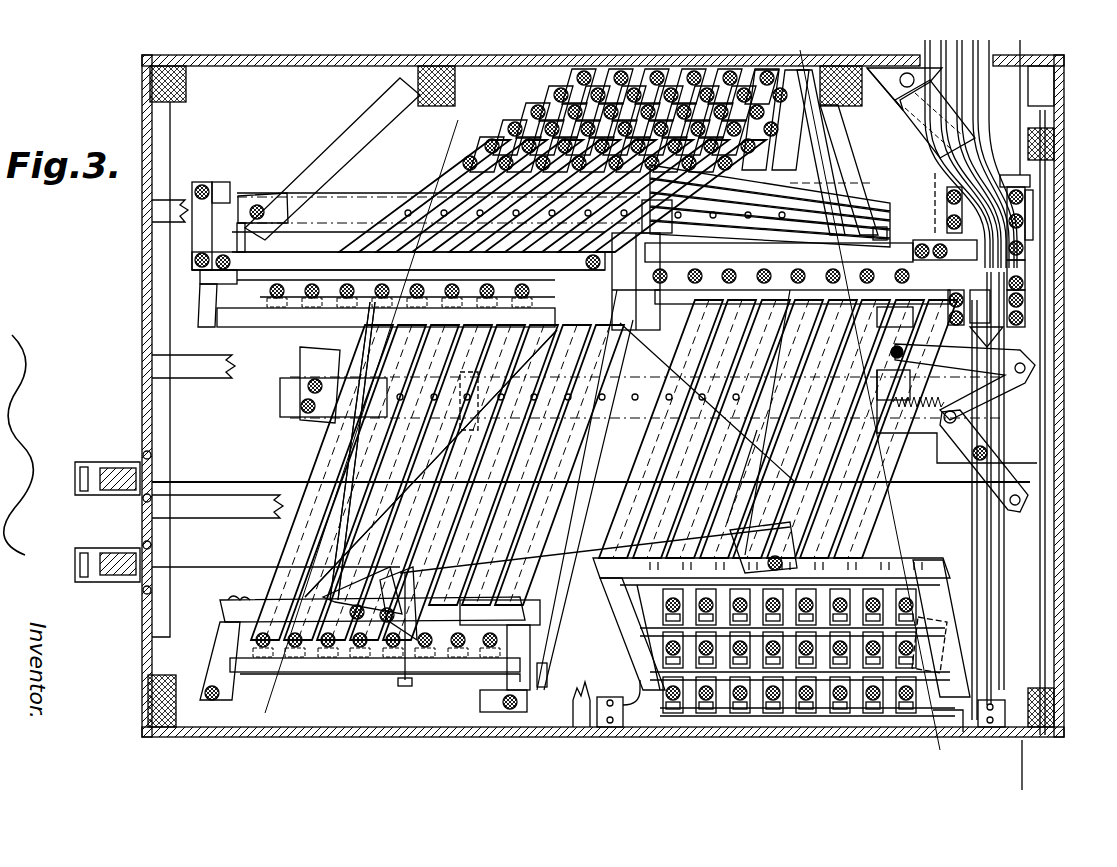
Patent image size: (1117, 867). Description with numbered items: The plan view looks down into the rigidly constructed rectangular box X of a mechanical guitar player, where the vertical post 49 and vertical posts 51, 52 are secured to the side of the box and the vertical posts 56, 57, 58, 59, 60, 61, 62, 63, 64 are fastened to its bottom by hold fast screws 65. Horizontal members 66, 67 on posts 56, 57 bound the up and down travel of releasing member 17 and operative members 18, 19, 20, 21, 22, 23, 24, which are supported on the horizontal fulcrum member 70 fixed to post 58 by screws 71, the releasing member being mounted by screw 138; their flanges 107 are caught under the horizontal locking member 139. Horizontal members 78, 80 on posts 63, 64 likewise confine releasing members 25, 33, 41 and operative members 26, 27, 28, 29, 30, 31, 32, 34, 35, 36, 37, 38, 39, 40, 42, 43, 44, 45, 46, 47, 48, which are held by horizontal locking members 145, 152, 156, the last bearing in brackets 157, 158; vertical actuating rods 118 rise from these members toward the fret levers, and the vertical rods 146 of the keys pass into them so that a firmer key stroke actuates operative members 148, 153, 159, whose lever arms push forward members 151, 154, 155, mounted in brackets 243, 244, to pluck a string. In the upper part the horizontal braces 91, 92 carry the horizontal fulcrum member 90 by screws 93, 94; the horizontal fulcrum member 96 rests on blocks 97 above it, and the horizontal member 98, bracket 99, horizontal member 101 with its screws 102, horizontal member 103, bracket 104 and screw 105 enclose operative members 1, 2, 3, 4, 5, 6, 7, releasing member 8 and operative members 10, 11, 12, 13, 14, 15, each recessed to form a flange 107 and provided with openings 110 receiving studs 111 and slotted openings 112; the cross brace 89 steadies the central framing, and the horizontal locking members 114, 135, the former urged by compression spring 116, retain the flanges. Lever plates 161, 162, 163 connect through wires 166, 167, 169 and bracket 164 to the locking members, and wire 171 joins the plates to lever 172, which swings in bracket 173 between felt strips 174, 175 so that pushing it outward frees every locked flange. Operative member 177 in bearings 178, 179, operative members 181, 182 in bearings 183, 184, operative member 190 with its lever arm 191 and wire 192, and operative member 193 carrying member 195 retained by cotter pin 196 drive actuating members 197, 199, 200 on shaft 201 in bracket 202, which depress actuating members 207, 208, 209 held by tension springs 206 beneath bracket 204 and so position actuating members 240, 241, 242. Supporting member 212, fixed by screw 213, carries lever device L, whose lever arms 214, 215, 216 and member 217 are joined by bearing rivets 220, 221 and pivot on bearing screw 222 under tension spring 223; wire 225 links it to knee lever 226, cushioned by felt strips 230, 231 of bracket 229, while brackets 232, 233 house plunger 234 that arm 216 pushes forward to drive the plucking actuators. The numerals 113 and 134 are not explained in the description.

The key lever 1 is at (456, 196).
The key lever 2 is at (492, 196).
The key lever 3 is at (529, 196).
The key lever 4 is at (565, 196).
The key lever 5 is at (602, 196).
The key lever 6 is at (638, 196).
The key lever 7 is at (675, 196).
The key lever 8 is at (419, 196).
The lever head 10 is at (490, 148).
The lever head 11 is at (492, 146).
The lever arm 12 is at (770, 230).
The lever arm 13 is at (770, 192).
The lever arm 14 is at (770, 211).
The lever arm 15 is at (770, 216).
The type bar 17 is at (322, 482).
The type bar 18 is at (355, 482).
The type bar 19 is at (388, 482).
The type bar 20 is at (421, 482).
The type bar 21 is at (454, 482).
The type bar 22 is at (493, 465).
The type bar 23 is at (526, 465).
The type bar 24 is at (559, 465).
The type bar 25 is at (661, 429).
The type bar 26 is at (694, 429).
The type bar 27 is at (728, 429).
The type bar 28 is at (761, 429).
The type bar 29 is at (795, 429).
The type bar 30 is at (828, 429).
The type bar 31 is at (862, 429).
The type bar 32 is at (895, 429).
The link 33 is at (628, 547).
The key tab 34 is at (572, 68).
The key tab 35 is at (610, 68).
The key tab 36 is at (648, 68).
The key tab 37 is at (686, 68).
The key tab 38 is at (722, 68).
The key tab 39 is at (759, 68).
The key tab 40 is at (795, 68).
The contact tab 41 is at (673, 712).
The contact tab 42 is at (706, 712).
The contact tab 43 is at (740, 712).
The contact tab 44 is at (773, 712).
The contact tab 45 is at (806, 712).
The contact tab 46 is at (840, 712).
The contact tab 47 is at (873, 712).
The contact tab 48 is at (906, 712).
The casing wall 49 is at (1059, 150).
The casing block 51 is at (418, 75).
The bracket 52 is at (867, 100).
The post 56 is at (206, 650).
The post 57 is at (535, 650).
The bracket 58 is at (300, 365).
The guide 59 is at (560, 372).
The frame bracket 60 is at (903, 425).
The bracket block 61 is at (214, 182).
The plate 62 is at (878, 230).
The post 63 is at (612, 620).
The strip 64 is at (930, 560).
The screw 65 is at (200, 190).
The plate 66 is at (222, 611).
The spring 67 is at (236, 598).
The bar 70 is at (400, 394).
The plate 71 is at (316, 380).
The plate 78 is at (600, 565).
The block 80 is at (929, 645).
The guide 89 is at (566, 352).
The bar 90 is at (345, 194).
The diagonal bar 91 is at (340, 152).
The bar 92 is at (822, 150).
The block 93 is at (257, 205).
The bar 94 is at (855, 196).
The bar 96 is at (372, 195).
The bar 97 is at (264, 243).
The bracket 98 is at (206, 297).
The post 99 is at (636, 281).
The bar 101 is at (300, 236).
The bar 102 is at (192, 258).
The plate 103 is at (888, 238).
The plate 104 is at (950, 328).
The rod 105 is at (935, 188).
The plate 107 is at (332, 327).
The bracket 110 is at (468, 376).
The bar 111 is at (432, 208).
The contact plate 112 is at (650, 585).
The bar 113 is at (398, 208).
The plate 114 is at (250, 327).
The tab 116 is at (750, 140).
The screw 118 is at (538, 110).
The plate 134 is at (368, 327).
The plate 135 is at (922, 298).
The bracket 138 is at (360, 415).
The plate 139 is at (322, 672).
The post 145 is at (640, 655).
The tab 146 is at (873, 712).
The plate 148 is at (625, 592).
The strip 151 is at (923, 52).
The bracket 152 is at (624, 700).
The strip 153 is at (1005, 660).
The strip 154 is at (943, 56).
The strip 155 is at (962, 52).
The bracket 156 is at (940, 732).
The bracket 157 is at (635, 727).
The block 158 is at (985, 727).
The bracket 159 is at (612, 727).
The link block 161 is at (431, 474).
The link block 162 is at (398, 603).
The link block 163 is at (763, 547).
The post 164 is at (405, 686).
The plate 166 is at (400, 682).
The link 167 is at (340, 468).
The rod 169 is at (750, 450).
The rod 171 is at (196, 567).
The coil 172 is at (110, 578).
The core 173 is at (82, 582).
The magnet 174 is at (85, 548).
The coil 175 is at (115, 553).
The bracket 177 is at (200, 312).
The bracket 178 is at (205, 282).
The bracket 179 is at (592, 312).
The bar 181 is at (751, 251).
The bar 182 is at (801, 251).
The plate 183 is at (905, 256).
The bar 184 is at (655, 254).
The plate 190 is at (440, 682).
The pin 191 is at (553, 676).
The rod 192 is at (560, 555).
The plate 193 is at (936, 325).
The block 195 is at (1025, 305).
The arrow piece 196 is at (996, 337).
The block 197 is at (1017, 173).
The block 199 is at (947, 200).
The block 200 is at (1033, 210).
The block 201 is at (1025, 250).
The block 202 is at (1025, 280).
The block 204 is at (915, 115).
The block 206 is at (925, 130).
The strip 207 is at (946, 160).
The strip 208 is at (985, 165).
The strip 209 is at (988, 148).
The bracket 212 is at (1054, 478).
The block 213 is at (906, 385).
The screw 214 is at (978, 448).
The pivot 215 is at (957, 413).
The lever arm 216 is at (975, 352).
The lever arm 217 is at (984, 461).
The arm 220 is at (966, 430).
The bracket 221 is at (1054, 410).
The pivot 222 is at (912, 352).
The spring 223 is at (938, 407).
The rod 225 is at (262, 482).
The coil 226 is at (115, 468).
The magnet 229 is at (85, 462).
The core 230 is at (75, 478).
The bracket 231 is at (152, 470).
The block 232 is at (1025, 320).
The block 233 is at (1033, 225).
The block 234 is at (1025, 195).
The strip 240 is at (982, 84).
The strip 241 is at (984, 100).
The strip 242 is at (983, 125).
The post 243 is at (935, 590).
The strip 244 is at (1010, 780).
The lever L is at (1007, 410).
The axis X is at (1062, 636).